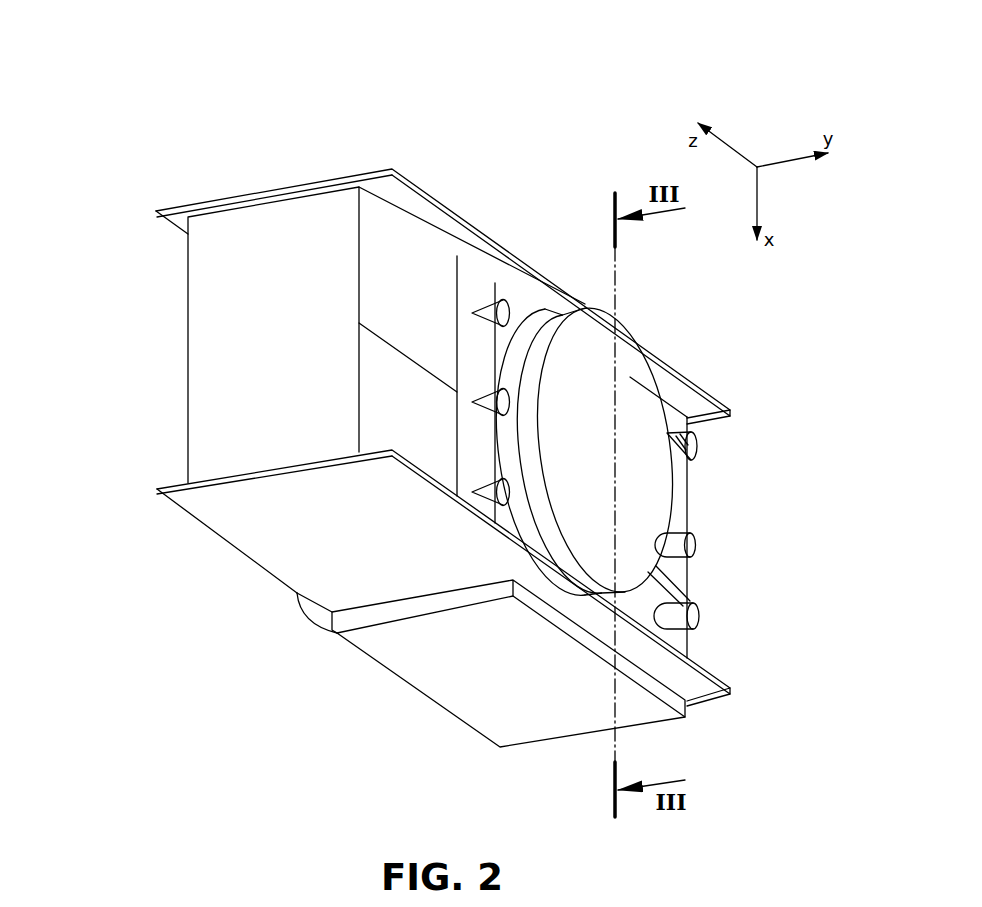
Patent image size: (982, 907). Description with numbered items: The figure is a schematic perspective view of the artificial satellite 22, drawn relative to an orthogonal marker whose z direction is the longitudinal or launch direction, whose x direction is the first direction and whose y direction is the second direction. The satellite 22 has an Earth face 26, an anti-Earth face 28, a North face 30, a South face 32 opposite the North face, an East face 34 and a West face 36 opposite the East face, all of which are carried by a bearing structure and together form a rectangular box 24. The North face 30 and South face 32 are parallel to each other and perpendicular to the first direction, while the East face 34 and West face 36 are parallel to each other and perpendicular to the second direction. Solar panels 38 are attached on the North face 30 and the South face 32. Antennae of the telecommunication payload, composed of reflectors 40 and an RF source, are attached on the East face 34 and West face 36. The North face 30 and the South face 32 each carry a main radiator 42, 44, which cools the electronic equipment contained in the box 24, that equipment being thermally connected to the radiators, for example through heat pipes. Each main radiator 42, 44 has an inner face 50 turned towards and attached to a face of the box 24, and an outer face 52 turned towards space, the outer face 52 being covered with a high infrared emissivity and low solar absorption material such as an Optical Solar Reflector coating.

The artificial satellite 22 is at (337, 705).
The rectangular box 24 is at (213, 413).
The Earth face 26 is at (200, 310).
The anti-Earth face 28 is at (720, 538).
The North face 30 is at (443, 293).
The South face 32 is at (443, 578).
The East face 34 is at (420, 270).
The West face 36 is at (178, 250).
The solar panels 38 is at (482, 702).
The reflectors 40 is at (625, 390).
The main radiator 42 is at (550, 257).
The main radiator 44 is at (279, 555).
The inner face 50 is at (400, 212).
The outer face 52 is at (432, 162).